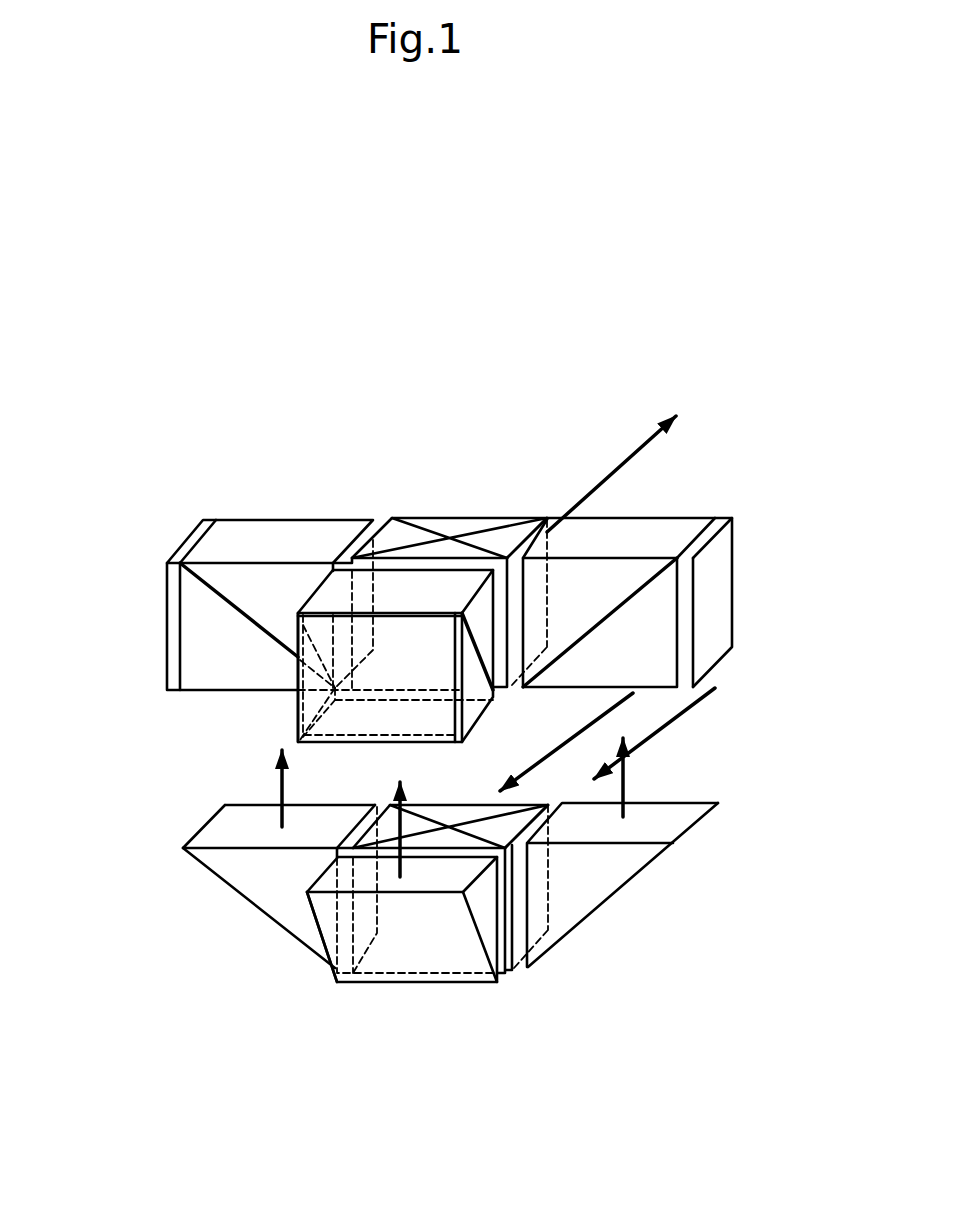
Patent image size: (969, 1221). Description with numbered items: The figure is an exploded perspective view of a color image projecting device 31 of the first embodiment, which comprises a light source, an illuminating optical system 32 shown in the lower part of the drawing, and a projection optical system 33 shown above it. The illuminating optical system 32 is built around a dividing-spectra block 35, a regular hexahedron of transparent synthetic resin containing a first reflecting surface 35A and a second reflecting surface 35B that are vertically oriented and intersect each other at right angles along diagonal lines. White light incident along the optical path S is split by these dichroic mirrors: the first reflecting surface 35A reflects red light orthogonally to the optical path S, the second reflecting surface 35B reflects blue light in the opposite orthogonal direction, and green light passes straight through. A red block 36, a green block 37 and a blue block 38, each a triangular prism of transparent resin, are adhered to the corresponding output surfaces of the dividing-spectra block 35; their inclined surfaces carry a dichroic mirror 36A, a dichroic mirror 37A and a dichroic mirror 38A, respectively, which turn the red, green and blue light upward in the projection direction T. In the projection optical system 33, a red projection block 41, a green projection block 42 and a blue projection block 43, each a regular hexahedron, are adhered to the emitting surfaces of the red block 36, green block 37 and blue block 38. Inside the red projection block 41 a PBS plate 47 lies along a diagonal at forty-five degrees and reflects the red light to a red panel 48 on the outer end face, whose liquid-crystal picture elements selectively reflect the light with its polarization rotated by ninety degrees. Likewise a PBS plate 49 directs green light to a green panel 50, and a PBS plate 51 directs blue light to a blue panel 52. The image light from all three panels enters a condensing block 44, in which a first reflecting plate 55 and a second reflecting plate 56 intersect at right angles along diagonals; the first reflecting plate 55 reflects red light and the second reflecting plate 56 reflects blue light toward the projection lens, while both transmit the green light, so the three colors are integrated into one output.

The color image projecting device 31 is at (760, 415).
The illuminating optical system 32 is at (120, 885).
The projection optical system 33 is at (128, 652).
The dividing-spectra block 35 is at (487, 798).
The first reflecting surface 35A is at (433, 790).
The second reflecting surface 35B is at (490, 800).
The red block 36 is at (710, 822).
The dichroic mirror 36A is at (615, 900).
The green block 37 is at (437, 987).
The dichroic mirror 37A is at (393, 953).
The blue block 38 is at (200, 823).
The dichroic mirror 38A is at (230, 892).
The red projection block 41 is at (685, 510).
The green projection block 42 is at (297, 703).
The blue projection block 43 is at (282, 520).
The condensing block 44 is at (418, 520).
The PBS plate 47 is at (632, 593).
The red panel 48 is at (737, 577).
The PBS plate 49 is at (498, 700).
The green panel 50 is at (297, 722).
The PBS plate 51 is at (222, 602).
The blue panel 52 is at (188, 542).
The first reflecting plate 55 is at (432, 533).
The second reflecting plate 56 is at (507, 520).
The optical path S is at (702, 697).
The projection direction T is at (278, 785).